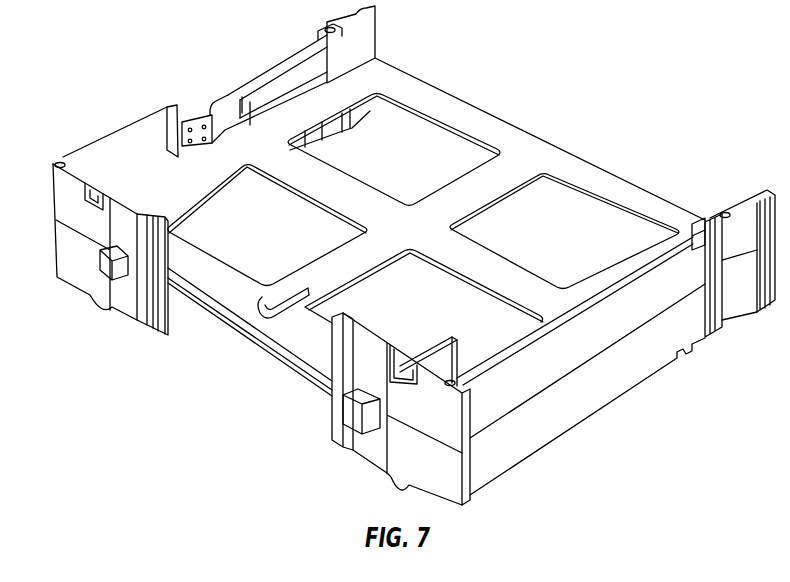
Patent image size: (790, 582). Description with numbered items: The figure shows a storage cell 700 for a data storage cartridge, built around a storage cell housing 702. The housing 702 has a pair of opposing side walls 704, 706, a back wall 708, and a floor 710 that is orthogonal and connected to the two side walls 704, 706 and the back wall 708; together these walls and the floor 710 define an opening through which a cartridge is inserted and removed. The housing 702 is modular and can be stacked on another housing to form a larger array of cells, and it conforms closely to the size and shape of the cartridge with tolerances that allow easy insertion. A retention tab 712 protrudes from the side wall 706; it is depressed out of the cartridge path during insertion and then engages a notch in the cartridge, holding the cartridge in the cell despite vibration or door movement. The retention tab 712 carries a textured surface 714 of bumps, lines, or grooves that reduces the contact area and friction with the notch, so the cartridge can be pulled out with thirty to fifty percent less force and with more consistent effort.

The tray assembly 700 is at (563, 104).
The storage cell housing 702 is at (633, 198).
The side wall 704 is at (597, 388).
The side wall 706 is at (298, 73).
The back wall 708 is at (77, 270).
The floor 710 is at (424, 97).
The retention tab 712 is at (232, 95).
The textured surface 714 is at (195, 136).